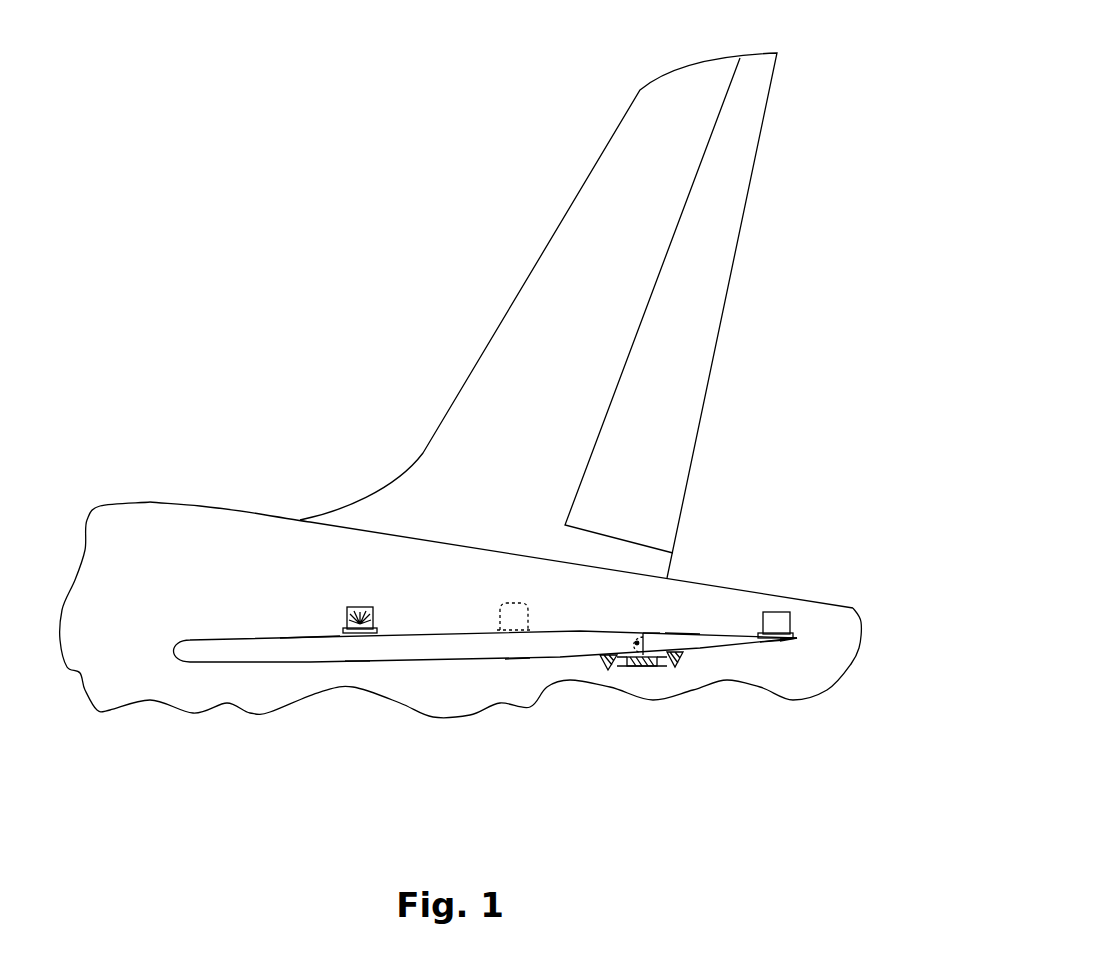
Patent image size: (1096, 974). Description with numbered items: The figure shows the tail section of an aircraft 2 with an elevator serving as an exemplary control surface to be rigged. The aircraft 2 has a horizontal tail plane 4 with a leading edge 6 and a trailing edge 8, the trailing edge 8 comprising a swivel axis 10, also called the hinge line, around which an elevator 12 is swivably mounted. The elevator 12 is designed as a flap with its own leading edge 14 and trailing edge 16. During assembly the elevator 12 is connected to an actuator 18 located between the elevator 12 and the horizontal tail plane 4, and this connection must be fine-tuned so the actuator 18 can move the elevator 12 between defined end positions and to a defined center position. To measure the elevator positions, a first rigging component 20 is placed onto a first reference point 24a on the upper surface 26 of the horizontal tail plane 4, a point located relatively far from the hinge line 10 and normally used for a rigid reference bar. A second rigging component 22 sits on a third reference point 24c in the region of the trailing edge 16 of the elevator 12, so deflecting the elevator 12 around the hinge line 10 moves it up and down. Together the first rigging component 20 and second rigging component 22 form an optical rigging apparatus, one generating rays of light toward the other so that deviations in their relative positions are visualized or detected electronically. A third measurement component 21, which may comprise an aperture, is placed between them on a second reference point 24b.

The aircraft 2 is at (278, 267).
The horizontal tail plane 4 is at (452, 653).
The leading edge 6 is at (157, 640).
The trailing edge 8 is at (638, 623).
The swivel axis 10 is at (637, 662).
The elevator 12 is at (680, 650).
The leading edge 14 is at (648, 627).
The trailing edge 16 is at (803, 645).
The actuator 18 is at (625, 677).
The first rigging component 20 is at (352, 587).
The third measurement component 21 is at (518, 593).
The second rigging component 22 is at (790, 605).
The first reference point 24a is at (357, 643).
The second reference point 24b is at (515, 638).
The third reference point 24c is at (772, 647).
The upper surface 26 is at (308, 630).